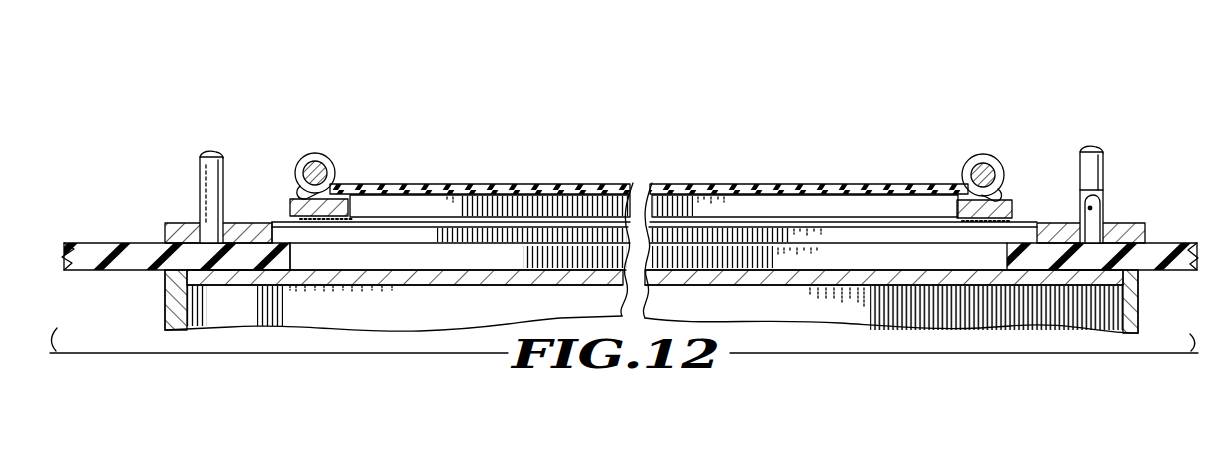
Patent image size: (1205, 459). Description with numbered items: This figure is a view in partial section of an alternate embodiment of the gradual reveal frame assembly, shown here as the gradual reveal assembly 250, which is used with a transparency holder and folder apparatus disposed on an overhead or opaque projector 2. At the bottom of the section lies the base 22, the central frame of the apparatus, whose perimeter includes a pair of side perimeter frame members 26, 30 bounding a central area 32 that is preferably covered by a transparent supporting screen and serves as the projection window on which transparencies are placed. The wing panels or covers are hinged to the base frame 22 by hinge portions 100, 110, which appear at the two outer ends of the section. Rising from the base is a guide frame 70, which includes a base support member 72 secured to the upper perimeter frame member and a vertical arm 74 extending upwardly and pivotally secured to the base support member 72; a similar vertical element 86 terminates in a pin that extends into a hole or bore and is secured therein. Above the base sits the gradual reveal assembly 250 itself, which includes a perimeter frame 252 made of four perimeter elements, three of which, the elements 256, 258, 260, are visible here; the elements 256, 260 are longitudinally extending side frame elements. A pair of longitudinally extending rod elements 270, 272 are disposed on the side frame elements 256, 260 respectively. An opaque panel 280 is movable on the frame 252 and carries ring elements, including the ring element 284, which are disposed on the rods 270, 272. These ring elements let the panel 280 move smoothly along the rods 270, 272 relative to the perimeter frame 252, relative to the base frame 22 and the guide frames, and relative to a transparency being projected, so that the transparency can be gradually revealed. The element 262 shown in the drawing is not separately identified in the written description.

The overhead or opaque projector 2 is at (283, 296).
The base 22 is at (146, 283).
The side perimeter frame member 26 is at (1084, 252).
The side perimeter frame member 30 is at (225, 258).
The central area 32 is at (297, 249).
The guide frame 70 is at (1116, 152).
The base support member 72 is at (404, 256).
The vertical arm 74 is at (1103, 192).
The vertical element 86 is at (200, 185).
The hinge portion 100 is at (1188, 246).
The hinge portion 110 is at (98, 252).
The gradual reveal assembly 250 is at (686, 170).
The perimeter frame 252 is at (438, 187).
The side frame element 256 is at (1032, 210).
The perimeter element 258 is at (543, 205).
The side frame element 260 is at (294, 208).
The right wrap sheet 262 is at (962, 163).
The rod element 270 is at (1003, 162).
The rod element 272 is at (313, 154).
The opaque panel 280 is at (776, 188).
The ring element 284 is at (338, 185).